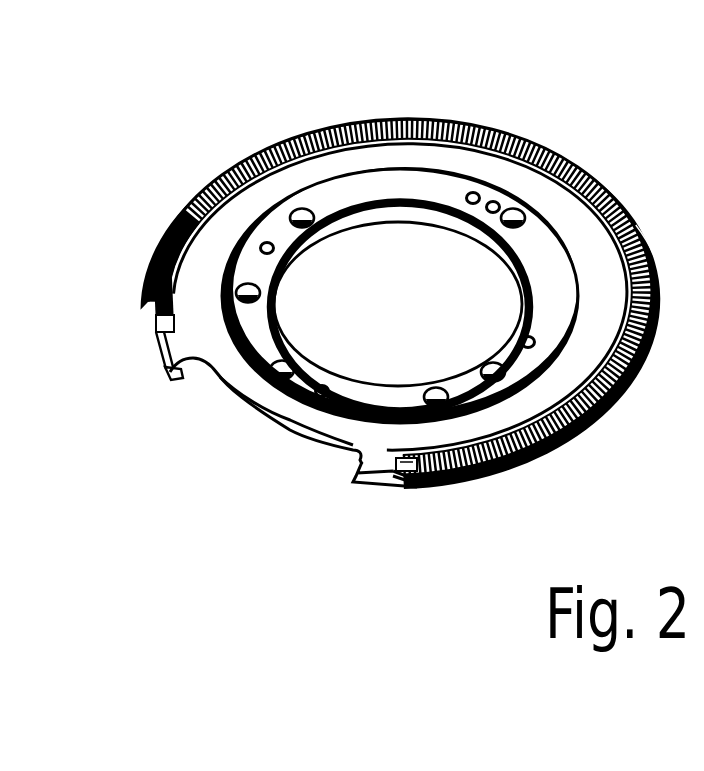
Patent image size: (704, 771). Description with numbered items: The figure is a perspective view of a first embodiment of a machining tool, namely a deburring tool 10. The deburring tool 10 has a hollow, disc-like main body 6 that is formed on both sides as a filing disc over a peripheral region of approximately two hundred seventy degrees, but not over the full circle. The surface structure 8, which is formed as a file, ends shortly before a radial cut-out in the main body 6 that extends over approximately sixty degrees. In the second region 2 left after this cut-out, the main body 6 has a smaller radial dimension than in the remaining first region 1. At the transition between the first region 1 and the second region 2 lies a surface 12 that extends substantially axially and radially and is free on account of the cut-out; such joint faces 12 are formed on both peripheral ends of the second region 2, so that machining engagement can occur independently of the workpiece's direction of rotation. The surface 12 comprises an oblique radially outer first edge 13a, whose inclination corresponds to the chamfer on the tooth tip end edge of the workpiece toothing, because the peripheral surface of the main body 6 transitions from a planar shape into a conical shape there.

The deburring tool 10 is at (157, 134).
The surface structure 8 is at (557, 146).
The main body 6 is at (248, 333).
The second region 2 is at (231, 452).
The surface 12 is at (170, 378).
The first region 1 is at (310, 100).
The first edge 13a is at (680, 20).